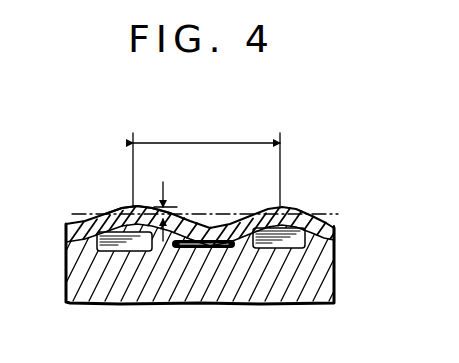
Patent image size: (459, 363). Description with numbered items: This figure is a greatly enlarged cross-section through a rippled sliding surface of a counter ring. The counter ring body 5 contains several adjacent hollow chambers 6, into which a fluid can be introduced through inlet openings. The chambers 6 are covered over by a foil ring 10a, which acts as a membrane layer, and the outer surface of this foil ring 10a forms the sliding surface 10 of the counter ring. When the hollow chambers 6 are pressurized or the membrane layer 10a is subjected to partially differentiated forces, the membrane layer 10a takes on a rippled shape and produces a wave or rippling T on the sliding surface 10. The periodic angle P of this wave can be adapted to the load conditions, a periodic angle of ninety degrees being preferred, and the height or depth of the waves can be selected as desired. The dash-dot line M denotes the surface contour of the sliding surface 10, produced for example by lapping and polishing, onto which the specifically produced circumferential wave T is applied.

The counter ring body 5 is at (121, 207).
The chamber 6 is at (105, 226).
The sliding surface 10 is at (287, 212).
The foil ring (membrane layer) 10a is at (336, 224).
The wave or rippling T is at (167, 206).
The surface contour M is at (218, 212).
The periodic angle P is at (206, 165).